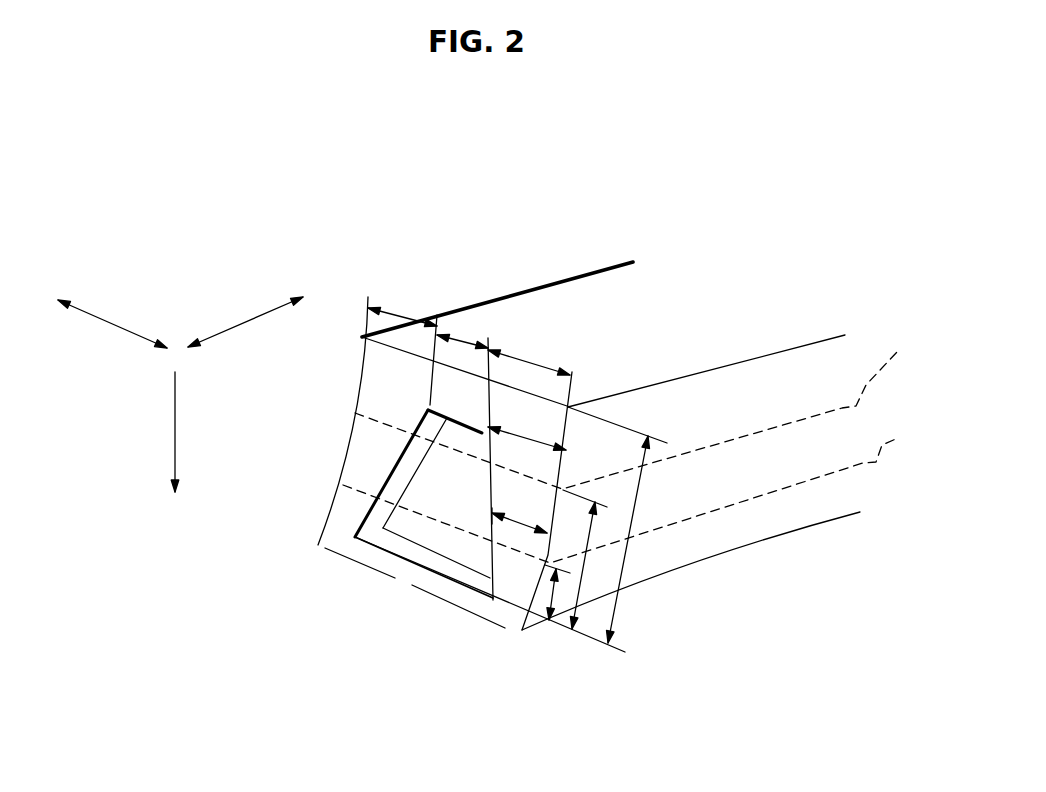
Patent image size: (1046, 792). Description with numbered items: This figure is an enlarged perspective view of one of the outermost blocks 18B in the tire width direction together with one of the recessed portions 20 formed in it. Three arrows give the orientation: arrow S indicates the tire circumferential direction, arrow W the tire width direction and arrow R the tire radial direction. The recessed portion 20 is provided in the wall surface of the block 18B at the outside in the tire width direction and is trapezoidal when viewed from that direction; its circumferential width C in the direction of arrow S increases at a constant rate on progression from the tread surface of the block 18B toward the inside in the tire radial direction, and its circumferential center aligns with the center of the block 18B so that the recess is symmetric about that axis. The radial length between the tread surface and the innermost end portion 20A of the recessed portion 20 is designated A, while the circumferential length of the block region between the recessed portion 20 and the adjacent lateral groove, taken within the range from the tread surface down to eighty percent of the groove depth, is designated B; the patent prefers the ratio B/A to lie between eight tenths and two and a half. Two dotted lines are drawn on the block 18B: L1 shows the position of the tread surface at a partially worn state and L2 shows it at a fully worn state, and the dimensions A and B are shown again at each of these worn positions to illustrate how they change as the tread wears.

The block 18B is at (545, 285).
The recessed portion 20 is at (437, 488).
The innermost end portion 20A is at (430, 563).
The arrow indicating tire circumferential direction S is at (112, 322).
The arrow indicating tire width direction W is at (247, 320).
The arrow indicating tire radial direction R is at (175, 425).
The length in tire circumferential direction B is at (397, 312).
The circumferential width C is at (463, 337).
The length between tread surface and innermost end portion A is at (628, 550).
The dotted line L1 is at (648, 410).
The dotted line L2 is at (642, 490).